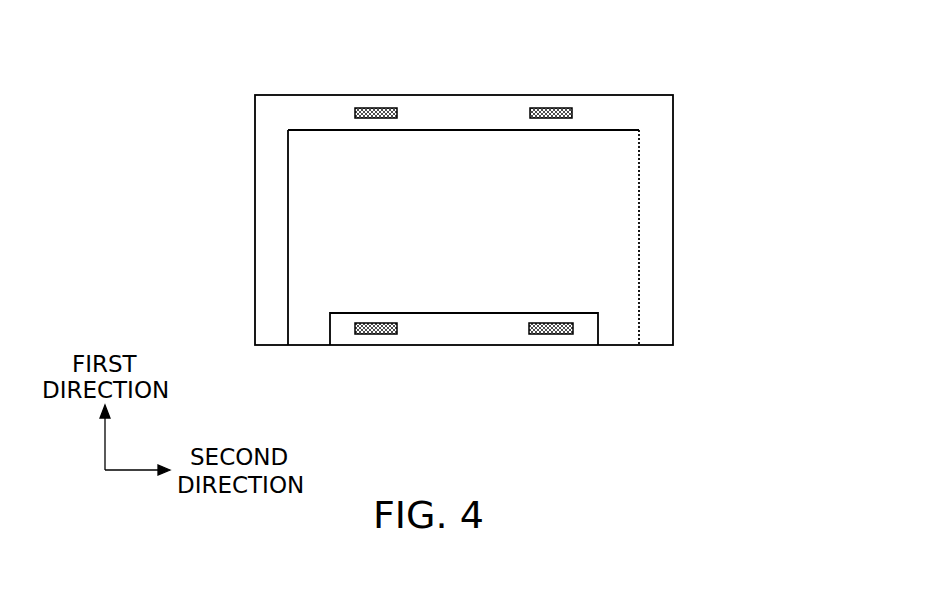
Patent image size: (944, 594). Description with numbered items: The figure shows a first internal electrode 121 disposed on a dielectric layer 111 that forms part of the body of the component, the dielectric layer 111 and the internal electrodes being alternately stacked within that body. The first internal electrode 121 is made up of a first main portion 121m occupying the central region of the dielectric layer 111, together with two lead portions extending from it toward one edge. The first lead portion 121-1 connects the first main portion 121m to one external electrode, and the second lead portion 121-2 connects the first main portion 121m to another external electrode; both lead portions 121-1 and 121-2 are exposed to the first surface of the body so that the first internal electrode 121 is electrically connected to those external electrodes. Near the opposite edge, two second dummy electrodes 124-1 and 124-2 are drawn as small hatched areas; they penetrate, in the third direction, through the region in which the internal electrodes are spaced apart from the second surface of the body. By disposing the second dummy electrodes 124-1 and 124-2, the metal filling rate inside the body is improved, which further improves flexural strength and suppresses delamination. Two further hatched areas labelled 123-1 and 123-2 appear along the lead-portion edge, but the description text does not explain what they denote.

The dielectric layer 111 is at (662, 223).
The first internal electrode 121 is at (566, 200).
The first main portion 121m is at (463, 268).
The 1-1 lead portion 121-1 is at (310, 335).
The 1-2 lead portion 121-2 is at (618, 333).
The first lower pad 123-1 is at (385, 334).
The second lower pad 123-2 is at (550, 334).
The second dummy electrode 124-1 is at (385, 110).
The second dummy electrode 124-2 is at (549, 110).